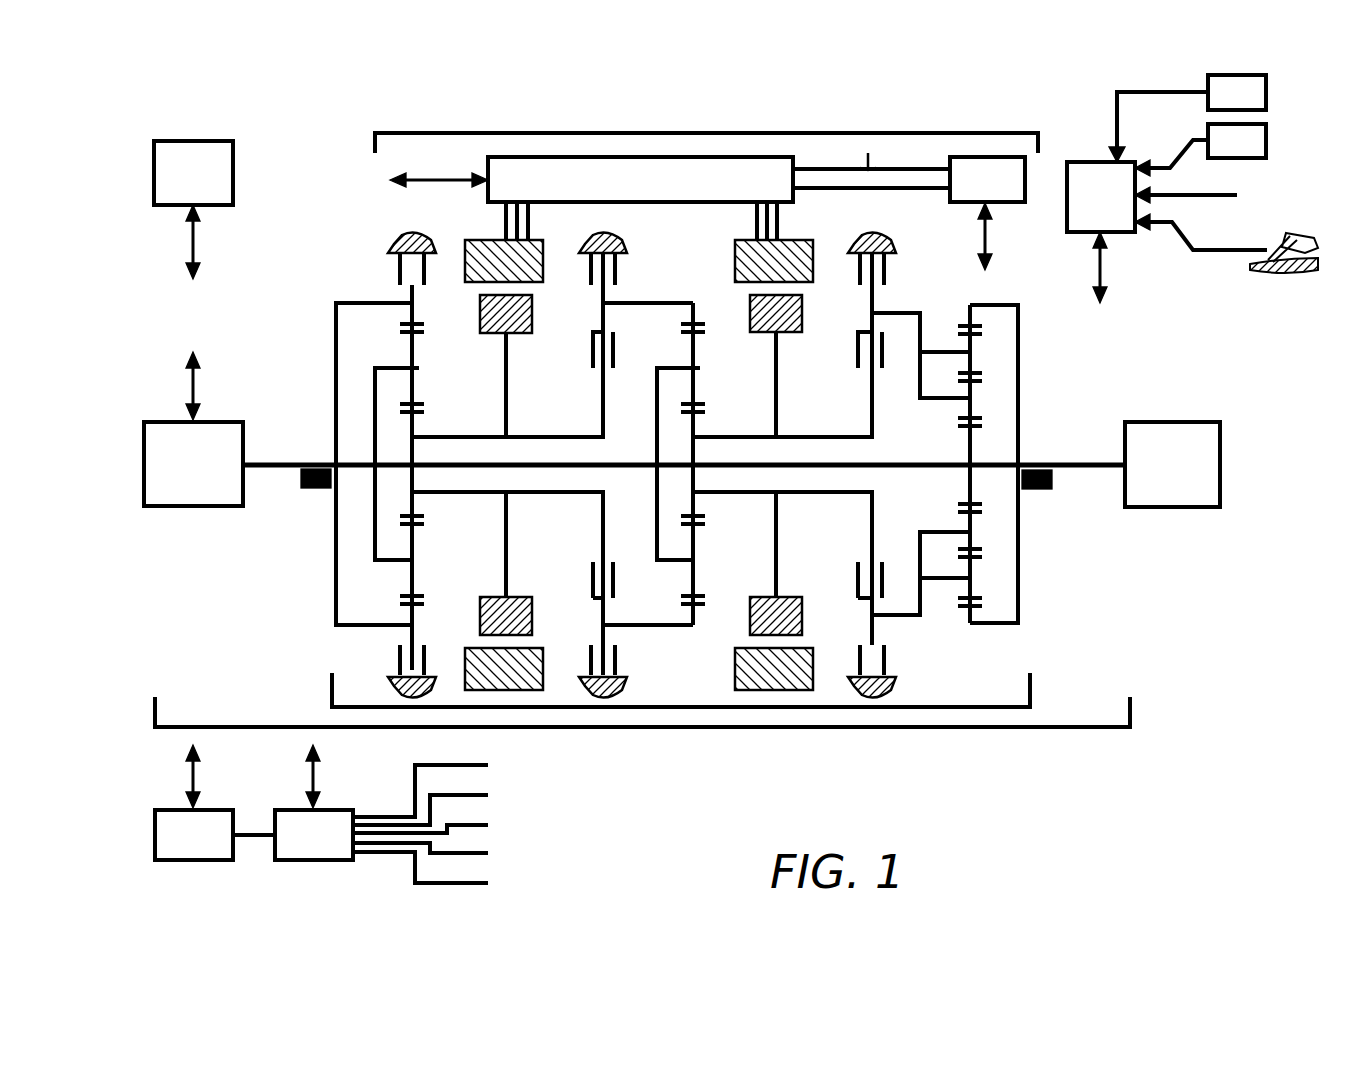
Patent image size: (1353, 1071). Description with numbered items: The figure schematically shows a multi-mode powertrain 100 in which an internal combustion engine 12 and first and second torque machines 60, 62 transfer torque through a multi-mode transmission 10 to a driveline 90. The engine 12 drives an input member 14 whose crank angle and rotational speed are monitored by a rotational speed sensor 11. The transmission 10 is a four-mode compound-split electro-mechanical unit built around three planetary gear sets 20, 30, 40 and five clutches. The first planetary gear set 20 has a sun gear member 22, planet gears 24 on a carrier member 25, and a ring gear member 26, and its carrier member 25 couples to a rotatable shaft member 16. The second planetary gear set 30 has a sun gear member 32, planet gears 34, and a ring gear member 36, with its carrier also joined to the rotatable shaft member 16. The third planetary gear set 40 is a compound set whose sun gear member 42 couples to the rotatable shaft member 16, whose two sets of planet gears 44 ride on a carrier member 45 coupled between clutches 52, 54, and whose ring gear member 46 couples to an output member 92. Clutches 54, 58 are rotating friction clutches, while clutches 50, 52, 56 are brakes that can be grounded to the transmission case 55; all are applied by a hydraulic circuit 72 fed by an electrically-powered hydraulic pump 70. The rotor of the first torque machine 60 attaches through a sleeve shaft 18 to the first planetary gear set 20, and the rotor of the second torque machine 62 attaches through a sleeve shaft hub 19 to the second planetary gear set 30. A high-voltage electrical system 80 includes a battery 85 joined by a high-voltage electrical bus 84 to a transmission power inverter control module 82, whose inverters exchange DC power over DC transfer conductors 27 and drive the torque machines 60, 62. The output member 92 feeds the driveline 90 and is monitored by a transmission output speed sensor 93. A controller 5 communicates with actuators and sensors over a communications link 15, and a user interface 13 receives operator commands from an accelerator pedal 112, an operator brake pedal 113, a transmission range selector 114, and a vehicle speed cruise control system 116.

The controller 5 is at (193, 173).
The multi-mode transmission 10 is at (805, 707).
The rotational speed sensor 11 is at (316, 490).
The internal combustion engine 12 is at (193, 464).
The user interface 13 is at (1101, 197).
The input member 14 is at (278, 482).
The communications link 15 is at (635, 479).
The rotatable shaft member 16 is at (610, 465).
The sleeve shaft 18 is at (548, 437).
The sleeve shaft hub 19 is at (823, 437).
The first planetary gear set 20 is at (425, 505).
The sun gear member 22 is at (412, 420).
The planet gears 24 is at (412, 368).
The carrier member 25 is at (375, 437).
The ring gear member 26 is at (418, 325).
The DC transfer conductors 27 is at (522, 225).
The second planetary gear set 30 is at (700, 568).
The sun gear member 32 is at (693, 420).
The planet gears 34 is at (693, 368).
The ring gear member 36 is at (697, 323).
The third planetary gear set 40 is at (955, 455).
The sun gear member 42 is at (972, 502).
The planet gears 44 is at (972, 550).
The carrier member 45 is at (920, 323).
The ring gear member 46 is at (968, 608).
The clutch C5 50 is at (400, 272).
The clutch C1 52 is at (884, 272).
The clutch C2 54 is at (858, 355).
The transmission case 55 is at (405, 243).
The clutch C3 56 is at (616, 267).
The clutch C4 58 is at (590, 355).
The first torque machine 60 is at (525, 292).
The second torque machine 62 is at (795, 292).
The electrically-powered hydraulic pump 70 is at (215, 835).
The hydraulic circuit 72 is at (399, 824).
The high-voltage electrical system 80 is at (715, 133).
The transmission power inverter control module 82 is at (640, 179).
The high-voltage electrical bus 84 is at (905, 169).
The battery 85 is at (909, 179).
The driveline 90 is at (1172, 464).
The output member 92 is at (1075, 465).
The transmission output speed sensor 93 is at (1052, 485).
The multi-mode powertrain 100 is at (713, 727).
The accelerator pedal 112 is at (1268, 258).
The operator brake pedal 113 is at (1211, 197).
The transmission range selector 114 is at (1200, 150).
The vehicle speed cruise control system 116 is at (1187, 118).